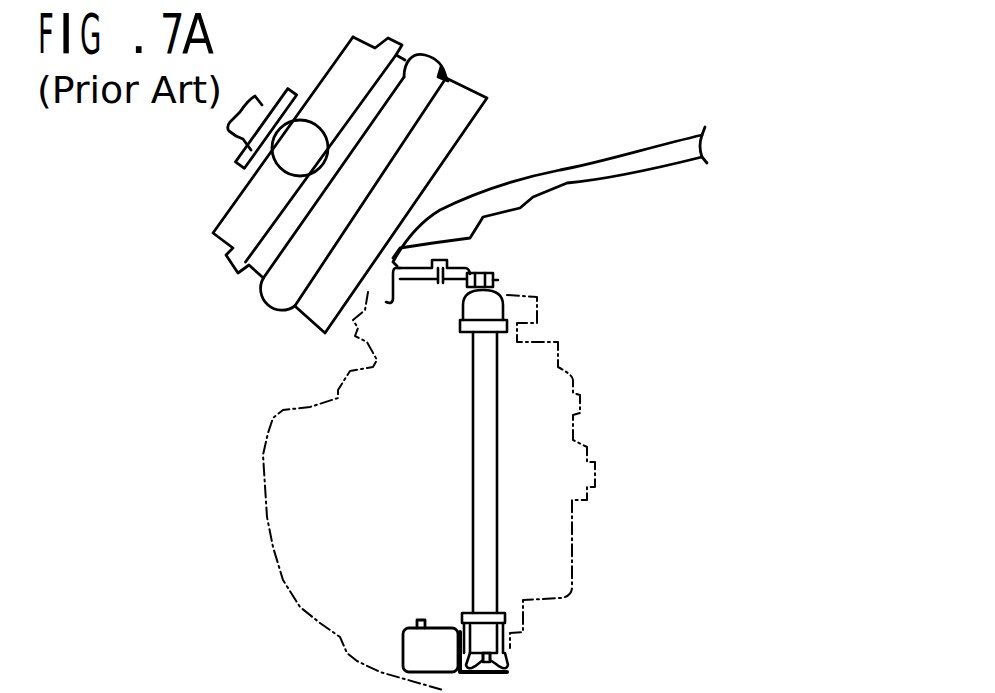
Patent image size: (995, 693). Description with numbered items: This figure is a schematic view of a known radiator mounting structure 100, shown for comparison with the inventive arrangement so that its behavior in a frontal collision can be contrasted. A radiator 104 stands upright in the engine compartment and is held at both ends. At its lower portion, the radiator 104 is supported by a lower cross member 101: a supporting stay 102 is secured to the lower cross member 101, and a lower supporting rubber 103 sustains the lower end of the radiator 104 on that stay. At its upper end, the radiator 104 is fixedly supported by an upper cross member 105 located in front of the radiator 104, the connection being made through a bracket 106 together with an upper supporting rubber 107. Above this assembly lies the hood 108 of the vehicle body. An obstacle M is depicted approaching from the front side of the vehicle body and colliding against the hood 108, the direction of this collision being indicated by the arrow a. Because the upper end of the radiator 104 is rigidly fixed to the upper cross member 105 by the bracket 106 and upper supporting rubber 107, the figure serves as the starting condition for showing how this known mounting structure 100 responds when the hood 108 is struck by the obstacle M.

The obstacle M is at (480, 96).
The arrow a is at (397, 213).
The known radiator mounting structure 100 is at (727, 223).
The lower cross member 101 is at (273, 657).
The supporting stay 102 is at (520, 656).
The lower supporting rubber 103 is at (508, 652).
The radiator 104 is at (468, 511).
The upper cross member 105 is at (417, 288).
The bracket 106 is at (460, 270).
The upper supporting rubber 107 is at (497, 276).
The hood 108 is at (629, 145).